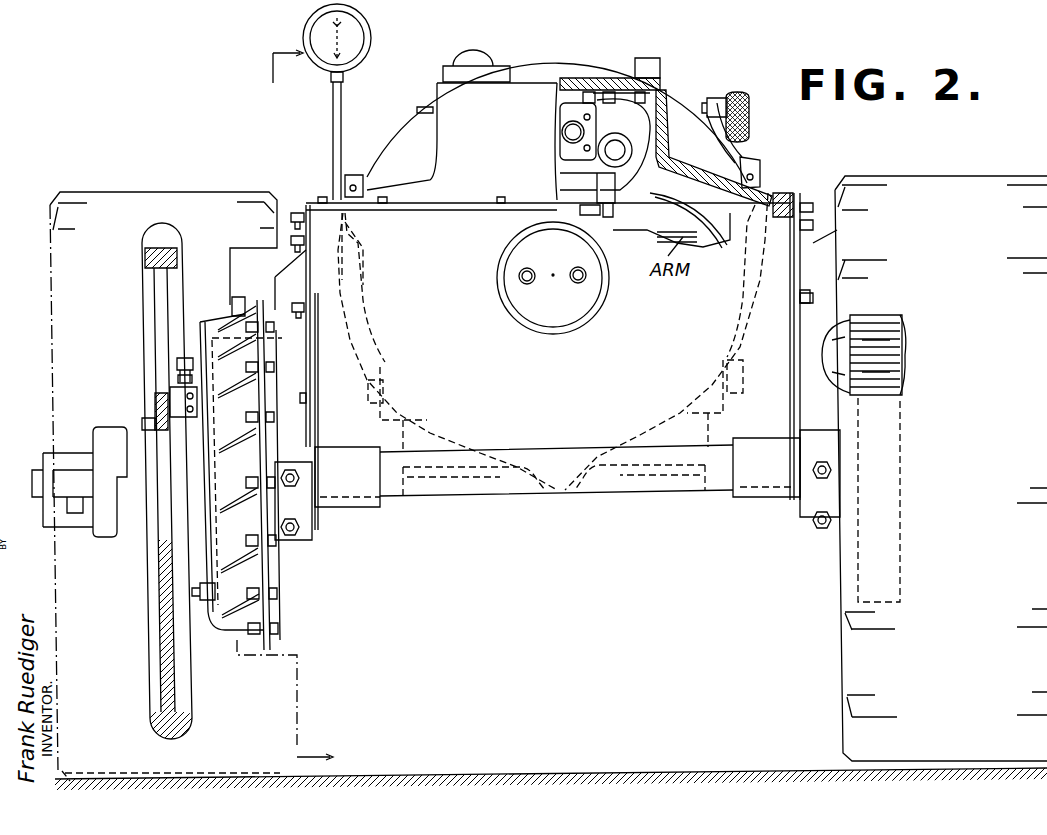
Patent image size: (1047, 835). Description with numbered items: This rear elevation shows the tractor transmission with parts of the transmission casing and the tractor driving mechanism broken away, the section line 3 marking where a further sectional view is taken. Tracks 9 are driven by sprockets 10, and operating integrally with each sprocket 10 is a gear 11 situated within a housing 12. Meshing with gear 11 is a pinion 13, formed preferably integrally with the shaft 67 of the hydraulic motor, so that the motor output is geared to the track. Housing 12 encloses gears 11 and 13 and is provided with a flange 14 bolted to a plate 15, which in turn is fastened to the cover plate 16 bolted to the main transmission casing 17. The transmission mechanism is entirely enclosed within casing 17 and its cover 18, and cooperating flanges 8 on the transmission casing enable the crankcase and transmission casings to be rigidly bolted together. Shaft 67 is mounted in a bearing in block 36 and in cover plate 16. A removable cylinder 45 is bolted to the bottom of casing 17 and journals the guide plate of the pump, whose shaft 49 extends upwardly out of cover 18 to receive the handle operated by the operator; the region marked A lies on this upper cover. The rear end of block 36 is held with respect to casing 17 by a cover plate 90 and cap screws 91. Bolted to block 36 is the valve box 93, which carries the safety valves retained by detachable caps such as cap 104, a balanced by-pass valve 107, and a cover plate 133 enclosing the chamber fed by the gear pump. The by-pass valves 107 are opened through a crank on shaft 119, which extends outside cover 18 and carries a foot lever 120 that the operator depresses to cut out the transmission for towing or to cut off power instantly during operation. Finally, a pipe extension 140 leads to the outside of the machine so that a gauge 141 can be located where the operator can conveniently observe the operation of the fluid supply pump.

The section line 3-3 / adjusting knob 3 is at (767, 127).
The flanges 8 is at (553, 68).
The tracks 9 is at (95, 192).
The sprocket 10 is at (158, 240).
The gear 11 is at (215, 490).
The housing 12 is at (215, 612).
The pinion 13 is at (207, 320).
The flange 14 is at (262, 640).
The plate 15 is at (272, 584).
The cover plate 16 is at (296, 285).
The main transmission casing 17 is at (378, 351).
The cover 18 is at (477, 177).
The block 36 is at (580, 210).
The removable cylinder 45 is at (442, 470).
The shaft 49 is at (443, 72).
The shaft 67 is at (284, 373).
The cover plate 90 is at (555, 307).
The cap screws 91 is at (580, 272).
The valve box 93 is at (573, 182).
The cap 104 is at (560, 157).
The balanced valve 107 is at (632, 152).
The shaft 119 is at (652, 180).
The foot lever 120 is at (752, 158).
The cover plate 133 is at (625, 105).
The pipe extension 140 is at (335, 163).
The gauge 141 is at (372, 32).
The cover A is at (467, 105).